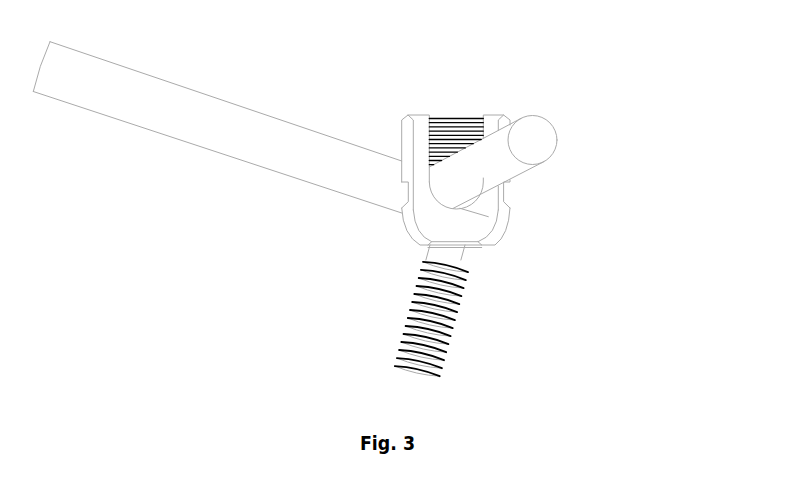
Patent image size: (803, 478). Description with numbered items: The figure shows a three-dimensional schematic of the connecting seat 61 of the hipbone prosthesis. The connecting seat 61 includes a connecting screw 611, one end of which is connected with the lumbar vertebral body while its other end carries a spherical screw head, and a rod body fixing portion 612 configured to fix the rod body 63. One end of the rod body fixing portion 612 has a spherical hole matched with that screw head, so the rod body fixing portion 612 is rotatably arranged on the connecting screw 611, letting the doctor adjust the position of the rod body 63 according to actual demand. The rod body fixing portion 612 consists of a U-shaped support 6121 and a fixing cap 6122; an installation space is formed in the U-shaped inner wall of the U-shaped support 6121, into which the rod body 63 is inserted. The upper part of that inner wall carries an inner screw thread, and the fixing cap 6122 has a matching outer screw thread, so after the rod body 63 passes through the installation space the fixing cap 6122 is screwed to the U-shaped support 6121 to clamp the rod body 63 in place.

The connecting seat 61 is at (572, 208).
The connecting screw 611 is at (537, 317).
The rod body fixing portion 612 is at (547, 145).
The U-shaped support 6121 is at (516, 221).
The fixing cap 6122 is at (443, 160).
The rod body 63 is at (302, 160).